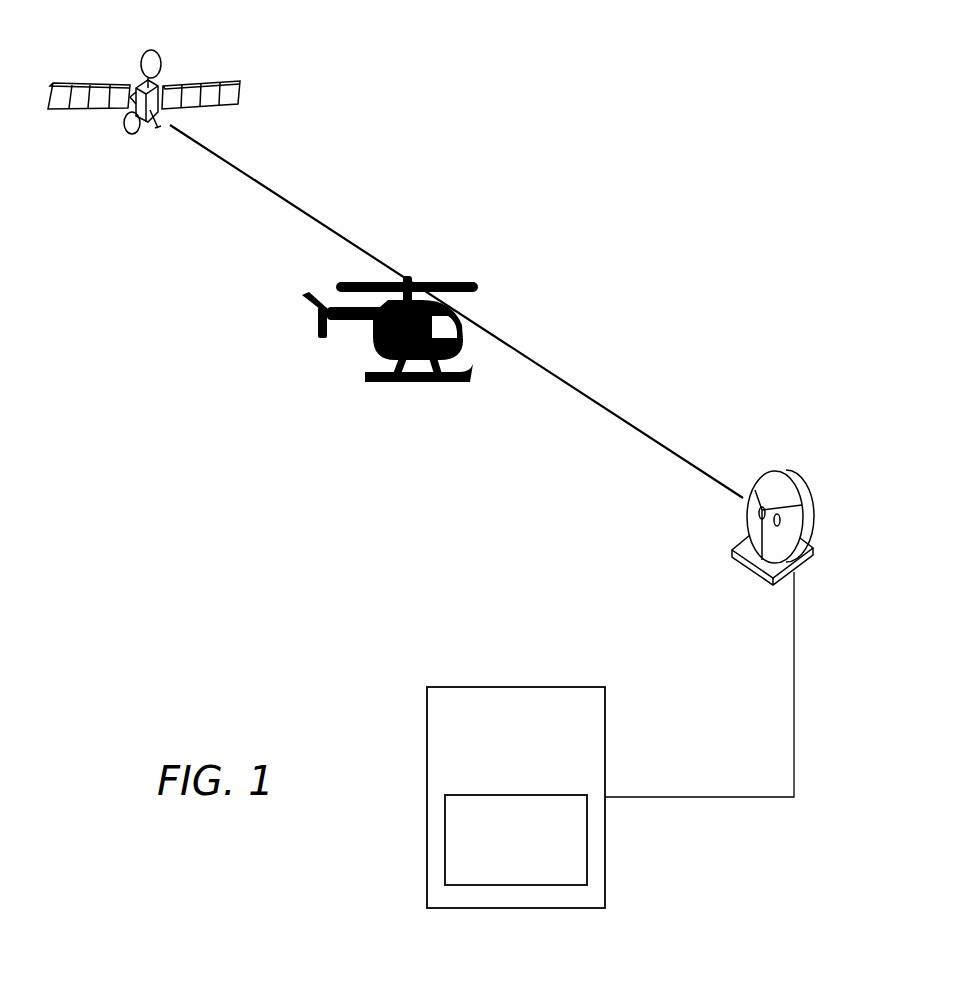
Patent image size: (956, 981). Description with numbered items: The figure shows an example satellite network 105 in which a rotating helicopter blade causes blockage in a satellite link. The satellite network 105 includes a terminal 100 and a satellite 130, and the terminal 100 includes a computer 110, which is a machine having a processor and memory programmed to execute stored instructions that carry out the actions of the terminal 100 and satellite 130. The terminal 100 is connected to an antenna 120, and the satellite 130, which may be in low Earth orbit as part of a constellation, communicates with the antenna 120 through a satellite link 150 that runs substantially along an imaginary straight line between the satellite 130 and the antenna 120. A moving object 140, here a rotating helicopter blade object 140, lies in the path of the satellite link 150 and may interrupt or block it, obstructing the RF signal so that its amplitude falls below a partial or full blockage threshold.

The terminal 100 is at (497, 770).
The satellite network 105 is at (605, 127).
The computer 110 is at (497, 873).
The antenna 120 is at (783, 470).
The satellite 130 is at (213, 82).
The moving object (rotating helicopter blade) 140 is at (450, 282).
The satellite link 150 is at (575, 387).